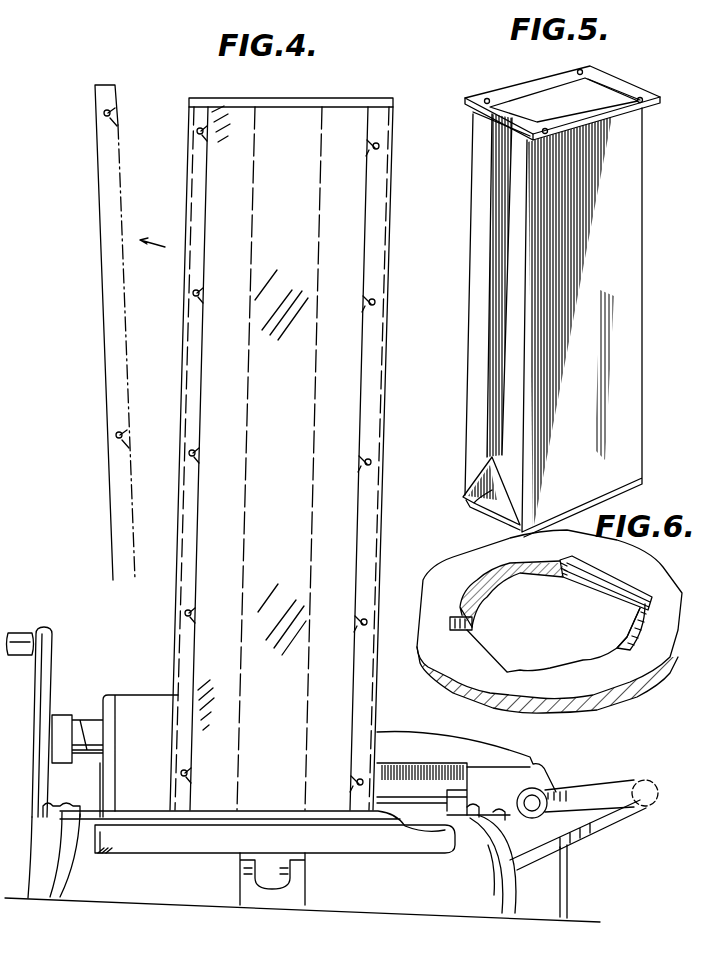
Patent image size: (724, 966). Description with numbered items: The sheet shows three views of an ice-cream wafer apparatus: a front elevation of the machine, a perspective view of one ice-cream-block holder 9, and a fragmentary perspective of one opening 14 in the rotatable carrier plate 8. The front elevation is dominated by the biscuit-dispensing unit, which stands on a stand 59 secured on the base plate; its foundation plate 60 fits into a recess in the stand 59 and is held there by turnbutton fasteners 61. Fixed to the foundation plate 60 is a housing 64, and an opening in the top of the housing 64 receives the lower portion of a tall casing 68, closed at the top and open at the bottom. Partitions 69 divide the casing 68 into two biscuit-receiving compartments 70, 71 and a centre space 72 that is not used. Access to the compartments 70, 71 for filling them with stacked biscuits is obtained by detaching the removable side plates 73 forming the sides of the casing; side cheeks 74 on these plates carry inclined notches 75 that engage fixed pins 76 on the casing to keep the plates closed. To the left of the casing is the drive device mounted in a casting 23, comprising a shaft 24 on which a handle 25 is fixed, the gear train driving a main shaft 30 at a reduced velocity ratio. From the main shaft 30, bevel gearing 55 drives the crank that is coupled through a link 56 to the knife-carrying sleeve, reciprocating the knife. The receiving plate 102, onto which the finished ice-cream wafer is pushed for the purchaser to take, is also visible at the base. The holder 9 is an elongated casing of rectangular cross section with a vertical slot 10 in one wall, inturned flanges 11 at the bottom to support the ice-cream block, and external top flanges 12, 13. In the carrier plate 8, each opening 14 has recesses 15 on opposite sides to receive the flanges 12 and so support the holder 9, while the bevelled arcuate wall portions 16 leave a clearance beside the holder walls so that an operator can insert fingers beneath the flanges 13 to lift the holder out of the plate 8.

In FIG. 6, the carrier plate 8 is at (667, 621).
In FIG. 5, the holder 9 is at (633, 268).
In FIG. 5, the vertical slot 10 is at (497, 287).
In FIG. 5, the inturned flanges 11 is at (492, 497).
In FIG. 5, the external top flanges 12 is at (488, 118).
In FIG. 5, the external top flanges 13 is at (517, 92).
In FIG. 6, the opening 14 is at (553, 622).
In FIG. 6, the recesses 15 is at (600, 575).
In FIG. 6, the arcuate wall portions 16 is at (478, 583).
In FIG. 4, the casting 23 is at (518, 782).
In FIG. 4, the shaft 24 is at (86, 730).
In FIG. 4, the handle 25 is at (22, 636).
In FIG. 4, the main shaft 30 is at (410, 798).
In FIG. 4, the bevel gearing 55 is at (590, 795).
In FIG. 4, the link 56 is at (596, 830).
In FIG. 4, the stand 59 is at (148, 896).
In FIG. 4, the foundation plate 60 is at (57, 898).
In FIG. 4, the turnbutton fasteners 61 is at (70, 806).
In FIG. 4, the housing 64 is at (402, 855).
In FIG. 4, the casing 68 is at (285, 438).
In FIG. 4, the partitions 69 is at (313, 438).
In FIG. 4, the biscuit-receiving compartment 70 is at (220, 458).
In FIG. 4, the biscuit-receiving compartment 71 is at (348, 458).
In FIG. 4, the centre space 72 is at (283, 426).
In FIG. 4, the removable side plates 73 is at (180, 338).
In FIG. 4, the side cheeks 74 is at (192, 388).
In FIG. 4, the inclined notches 75 is at (372, 150).
In FIG. 4, the fixed pins 76 is at (197, 132).
In FIG. 4, the receiving plate 102 is at (292, 888).